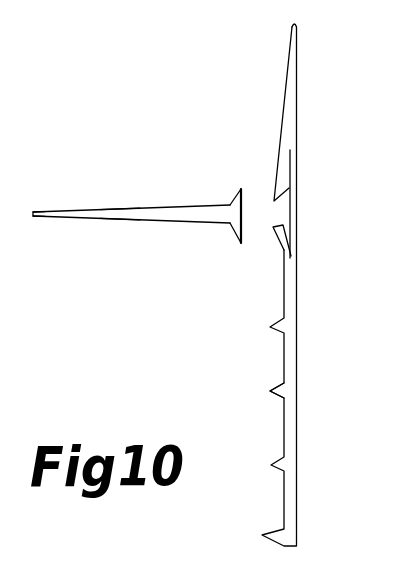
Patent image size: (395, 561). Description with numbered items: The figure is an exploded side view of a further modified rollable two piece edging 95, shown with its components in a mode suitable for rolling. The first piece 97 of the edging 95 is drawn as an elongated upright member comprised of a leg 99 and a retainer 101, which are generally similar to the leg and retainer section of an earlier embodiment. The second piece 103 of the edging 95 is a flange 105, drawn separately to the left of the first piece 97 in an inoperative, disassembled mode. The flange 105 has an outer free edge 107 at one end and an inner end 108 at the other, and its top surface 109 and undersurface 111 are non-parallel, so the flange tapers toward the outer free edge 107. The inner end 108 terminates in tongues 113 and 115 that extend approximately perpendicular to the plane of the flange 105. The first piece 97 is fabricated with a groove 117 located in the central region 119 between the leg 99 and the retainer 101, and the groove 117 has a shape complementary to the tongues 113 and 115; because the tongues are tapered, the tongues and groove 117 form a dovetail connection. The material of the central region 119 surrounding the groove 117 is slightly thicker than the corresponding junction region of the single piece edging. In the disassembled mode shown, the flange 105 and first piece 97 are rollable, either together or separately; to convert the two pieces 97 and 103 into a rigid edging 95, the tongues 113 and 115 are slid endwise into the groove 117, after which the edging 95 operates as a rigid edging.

The two piece edging 95 is at (205, 304).
The first piece 97 is at (297, 320).
The leg 99 is at (292, 378).
The retainer 101 is at (295, 54).
The second piece 103 is at (75, 220).
The flange 105 is at (150, 224).
The outer free edge 107 is at (33, 211).
The inner end 108 is at (233, 203).
The top surface 109 is at (141, 209).
The undersurface 111 is at (108, 222).
The tongue 113 is at (237, 203).
The tongue 115 is at (235, 227).
The groove 117 is at (284, 213).
The central region 119 is at (291, 157).